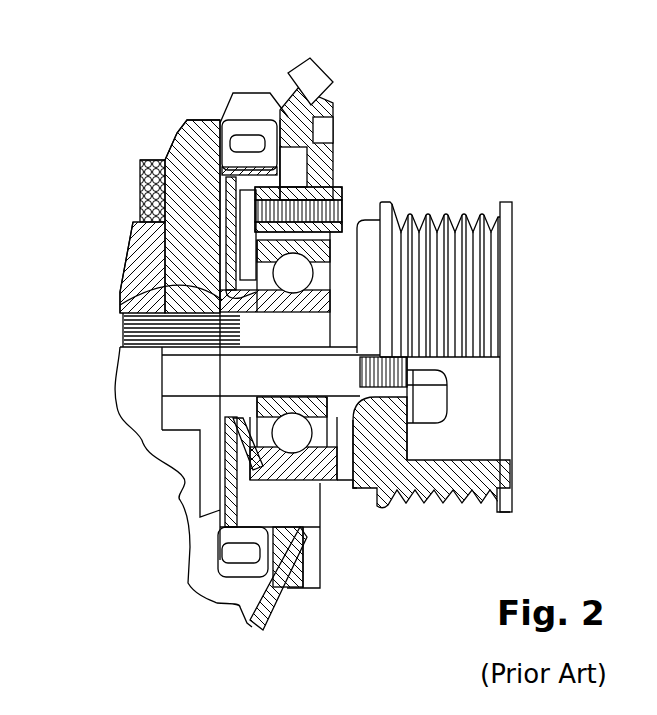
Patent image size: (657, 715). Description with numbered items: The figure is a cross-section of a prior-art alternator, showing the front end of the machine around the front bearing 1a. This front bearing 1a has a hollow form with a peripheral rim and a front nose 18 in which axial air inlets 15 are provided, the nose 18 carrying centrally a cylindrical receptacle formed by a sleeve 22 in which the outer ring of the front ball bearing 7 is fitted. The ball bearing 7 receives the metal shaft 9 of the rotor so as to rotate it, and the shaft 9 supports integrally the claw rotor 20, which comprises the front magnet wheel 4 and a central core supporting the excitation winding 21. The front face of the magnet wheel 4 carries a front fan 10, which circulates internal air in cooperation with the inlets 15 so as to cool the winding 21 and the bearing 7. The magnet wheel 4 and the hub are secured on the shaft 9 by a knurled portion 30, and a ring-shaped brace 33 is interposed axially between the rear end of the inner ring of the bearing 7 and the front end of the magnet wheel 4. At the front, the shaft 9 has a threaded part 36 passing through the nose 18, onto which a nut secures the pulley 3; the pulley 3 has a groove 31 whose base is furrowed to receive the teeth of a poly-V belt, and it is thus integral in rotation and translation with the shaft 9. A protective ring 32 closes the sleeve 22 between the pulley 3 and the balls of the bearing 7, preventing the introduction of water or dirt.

The front bearing 1a is at (307, 80).
The front nose 18 is at (318, 105).
The rotor 20 is at (127, 237).
The excitation winding 21 is at (143, 160).
The sleeve 22 is at (317, 187).
The ring 32 is at (353, 222).
The brace 33 is at (120, 302).
The knurled portion 30 is at (125, 340).
The pulley 3 is at (476, 331).
The groove 31 is at (463, 222).
The threaded part 36 is at (447, 373).
The front ball bearing 7 is at (297, 435).
The shaft 9 is at (277, 377).
The magnet wheel 4 is at (177, 497).
The axial air inlets 15 is at (298, 515).
The front fan 10 is at (252, 568).